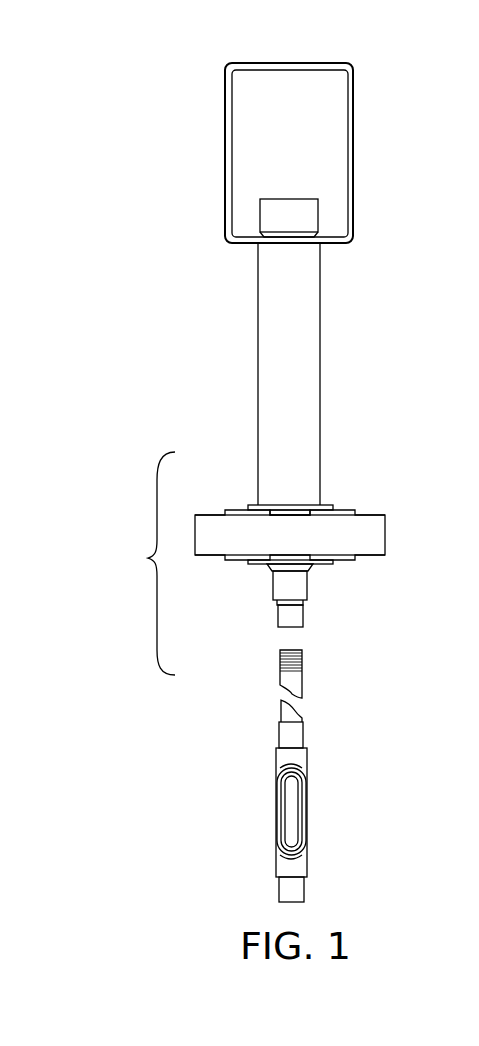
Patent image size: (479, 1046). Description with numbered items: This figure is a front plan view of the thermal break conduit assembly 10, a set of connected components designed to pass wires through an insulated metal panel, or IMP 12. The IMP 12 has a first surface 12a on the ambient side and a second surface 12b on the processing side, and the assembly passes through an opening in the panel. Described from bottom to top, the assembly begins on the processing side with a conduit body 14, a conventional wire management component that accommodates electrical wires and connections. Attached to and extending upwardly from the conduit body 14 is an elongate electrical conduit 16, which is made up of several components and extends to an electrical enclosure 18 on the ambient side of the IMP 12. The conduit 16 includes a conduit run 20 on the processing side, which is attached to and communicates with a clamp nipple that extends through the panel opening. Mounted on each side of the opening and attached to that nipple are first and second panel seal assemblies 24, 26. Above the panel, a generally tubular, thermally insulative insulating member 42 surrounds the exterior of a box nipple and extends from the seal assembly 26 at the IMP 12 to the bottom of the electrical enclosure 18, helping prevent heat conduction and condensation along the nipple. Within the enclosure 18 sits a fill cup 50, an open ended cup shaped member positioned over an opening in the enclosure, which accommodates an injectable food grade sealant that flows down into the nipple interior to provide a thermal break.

The conduit assembly 10 is at (162, 216).
The electrical enclosure 18 is at (342, 104).
The fill cup 50 is at (297, 207).
The insulating member 42 is at (312, 307).
The electrical conduit 16 is at (151, 563).
The insulated metal panel 12 is at (316, 536).
The first surface 12a is at (367, 515).
The second surface 12b is at (367, 556).
The second panel seal assembly 26 is at (297, 512).
The first panel seal assembly 24 is at (278, 575).
The conduit run 20 is at (297, 713).
The conduit body 14 is at (308, 810).